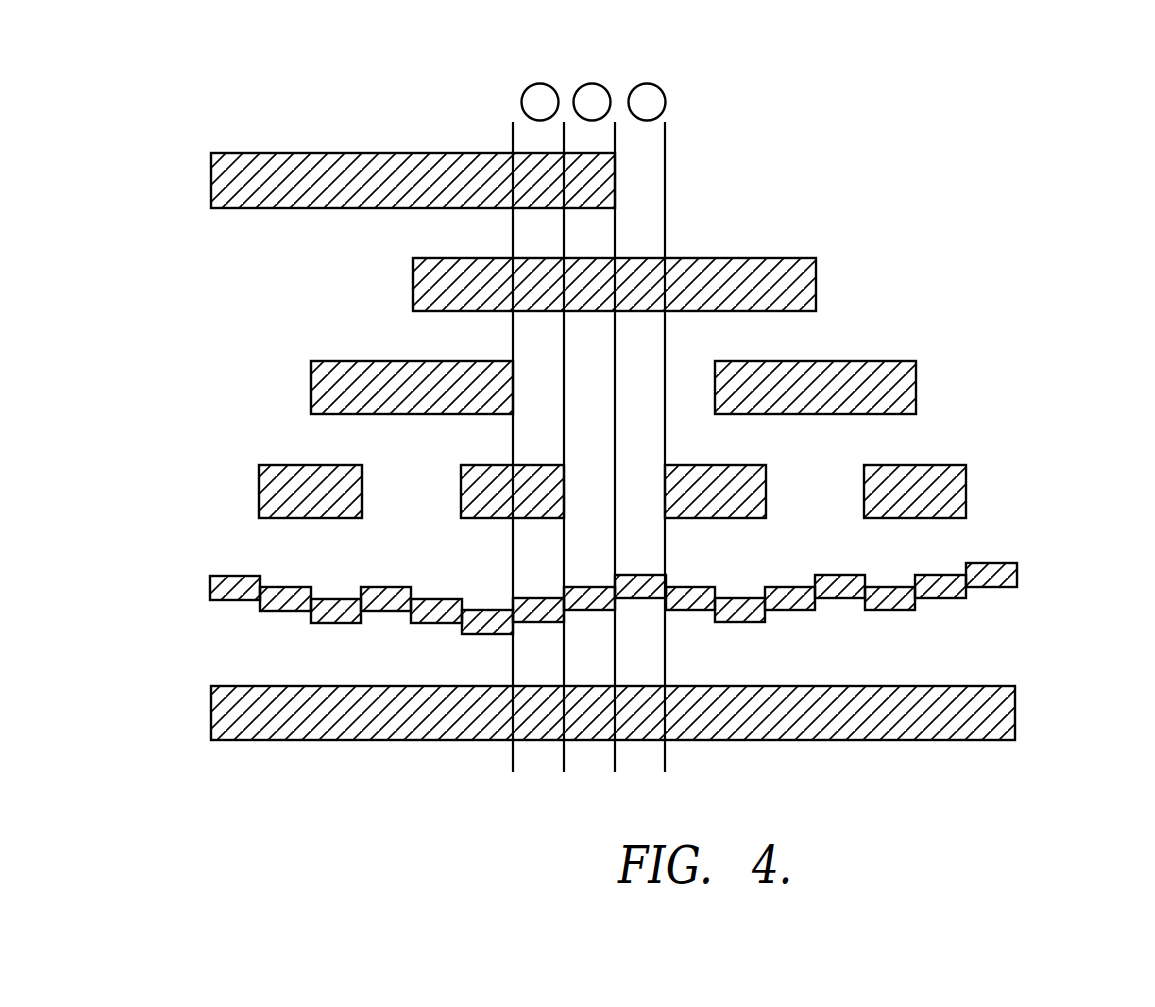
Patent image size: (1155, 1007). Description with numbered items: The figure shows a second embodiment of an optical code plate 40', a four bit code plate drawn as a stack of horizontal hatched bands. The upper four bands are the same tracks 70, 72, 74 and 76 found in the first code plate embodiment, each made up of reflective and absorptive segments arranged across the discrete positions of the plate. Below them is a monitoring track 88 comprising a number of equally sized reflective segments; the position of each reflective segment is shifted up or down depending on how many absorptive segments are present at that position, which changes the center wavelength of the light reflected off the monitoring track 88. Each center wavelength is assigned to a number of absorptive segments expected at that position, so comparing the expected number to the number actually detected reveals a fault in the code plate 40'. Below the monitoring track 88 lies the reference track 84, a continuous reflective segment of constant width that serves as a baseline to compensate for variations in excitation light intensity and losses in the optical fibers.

The code plate 40' is at (682, 408).
The track 70 is at (1154, 177).
The track 72 is at (1154, 283).
The track 74 is at (1154, 387).
The track 76 is at (1154, 490).
The monitoring track 88 is at (1078, 571).
The reference track 84 is at (977, 740).